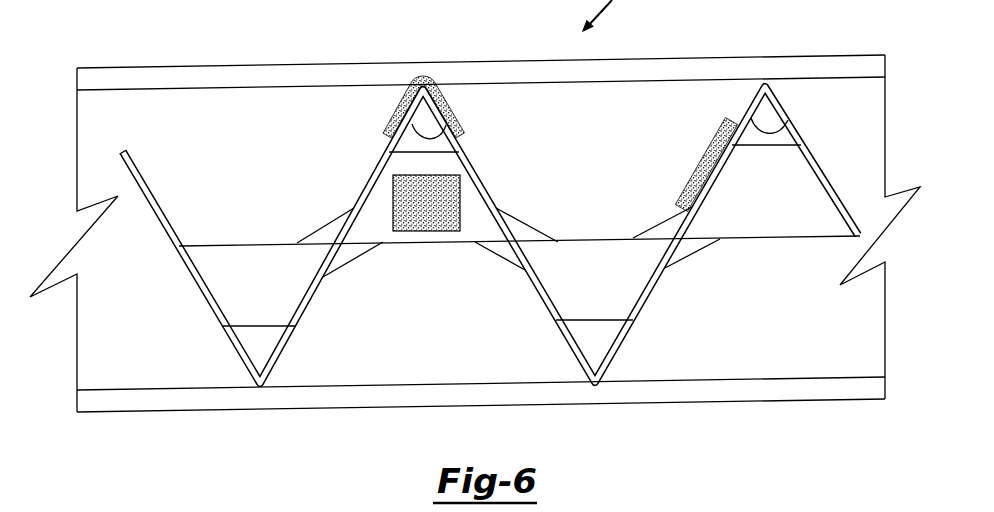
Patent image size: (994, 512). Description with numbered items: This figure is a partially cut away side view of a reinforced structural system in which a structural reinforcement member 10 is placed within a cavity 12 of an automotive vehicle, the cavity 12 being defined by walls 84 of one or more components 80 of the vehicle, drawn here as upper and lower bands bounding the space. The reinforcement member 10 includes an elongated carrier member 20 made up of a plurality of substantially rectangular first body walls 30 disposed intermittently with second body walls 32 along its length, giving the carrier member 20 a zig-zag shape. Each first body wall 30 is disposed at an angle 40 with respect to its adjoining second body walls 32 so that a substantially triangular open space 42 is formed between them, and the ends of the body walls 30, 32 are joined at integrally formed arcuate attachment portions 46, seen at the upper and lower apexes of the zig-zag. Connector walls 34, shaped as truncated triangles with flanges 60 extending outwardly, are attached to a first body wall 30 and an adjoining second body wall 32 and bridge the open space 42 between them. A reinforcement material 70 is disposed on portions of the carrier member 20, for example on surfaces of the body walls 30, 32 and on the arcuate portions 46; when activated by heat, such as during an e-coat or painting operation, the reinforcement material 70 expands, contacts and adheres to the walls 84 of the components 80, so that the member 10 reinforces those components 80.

The structural reinforcement member 10 is at (551, 140).
The cavity 12 is at (775, 341).
The carrier member 20 is at (487, 190).
The first body walls 30 is at (176, 262).
The second body walls 32 is at (385, 158).
The connector walls 34 is at (407, 238).
The angle 40 is at (443, 133).
The open space 42 is at (609, 226).
The attachment portions 46 is at (424, 86).
The flanges 60 is at (527, 232).
The reinforcement material 70 is at (399, 113).
The components 80 is at (152, 72).
The walls 84 is at (262, 88).